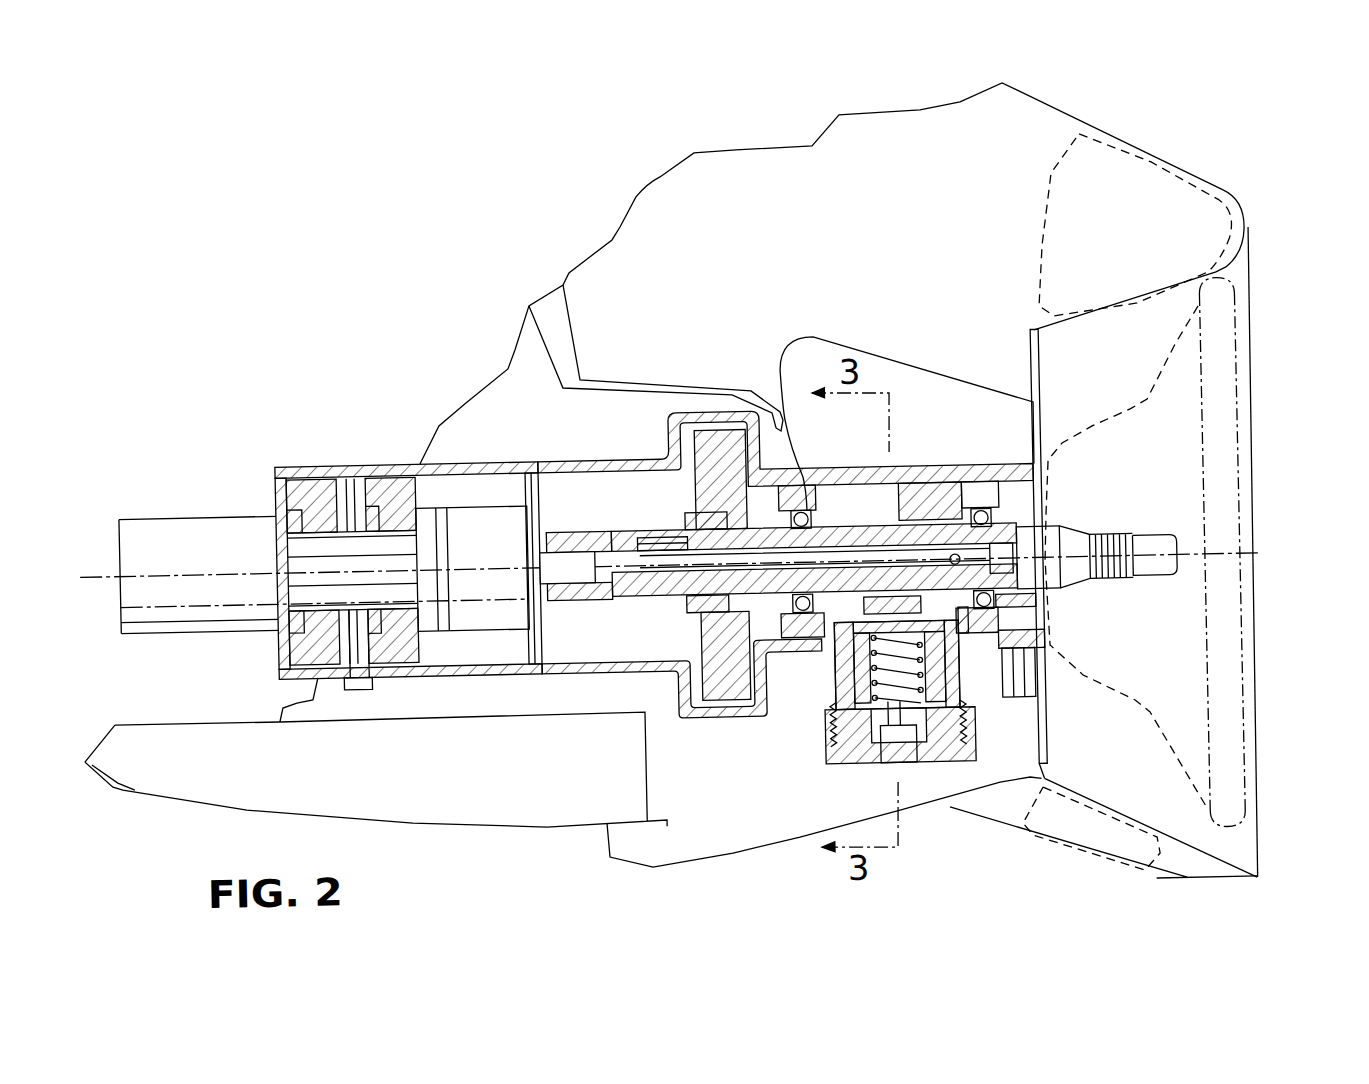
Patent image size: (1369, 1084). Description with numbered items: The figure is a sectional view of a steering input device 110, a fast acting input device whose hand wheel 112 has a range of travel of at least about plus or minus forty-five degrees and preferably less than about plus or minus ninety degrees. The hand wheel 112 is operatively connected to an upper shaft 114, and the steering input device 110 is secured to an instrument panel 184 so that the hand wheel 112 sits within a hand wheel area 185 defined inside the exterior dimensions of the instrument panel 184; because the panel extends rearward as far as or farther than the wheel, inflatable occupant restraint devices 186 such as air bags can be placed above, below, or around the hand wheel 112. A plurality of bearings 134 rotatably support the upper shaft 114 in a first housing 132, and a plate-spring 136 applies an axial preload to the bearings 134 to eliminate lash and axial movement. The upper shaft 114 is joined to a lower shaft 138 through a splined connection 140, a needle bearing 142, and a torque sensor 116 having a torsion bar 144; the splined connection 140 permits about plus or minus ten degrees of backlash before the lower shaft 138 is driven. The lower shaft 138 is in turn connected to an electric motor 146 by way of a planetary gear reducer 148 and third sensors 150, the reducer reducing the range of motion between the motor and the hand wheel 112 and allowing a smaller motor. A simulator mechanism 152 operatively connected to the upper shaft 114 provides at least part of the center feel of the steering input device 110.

The steering input device 110 is at (435, 307).
The hand wheel 112 is at (1235, 834).
The upper shaft 114 is at (1068, 545).
The torque sensor 116 is at (712, 701).
The first housing 132 is at (955, 476).
The bearings 134 is at (806, 510).
The plate-spring 136 is at (756, 615).
The lower shaft 138 is at (641, 524).
The splined connection 140 is at (691, 532).
The needle bearing 142 is at (649, 592).
The torsion bar 144 is at (639, 591).
The electric motor 146 is at (193, 510).
The planetary gear reducer 148 is at (466, 628).
The third sensors 150 is at (379, 481).
The simulator mechanism 152 is at (919, 617).
The instrument panel 184 is at (1241, 202).
The hand wheel area 185 is at (1188, 839).
The inflatable occupant restraint devices 186 is at (1165, 172).